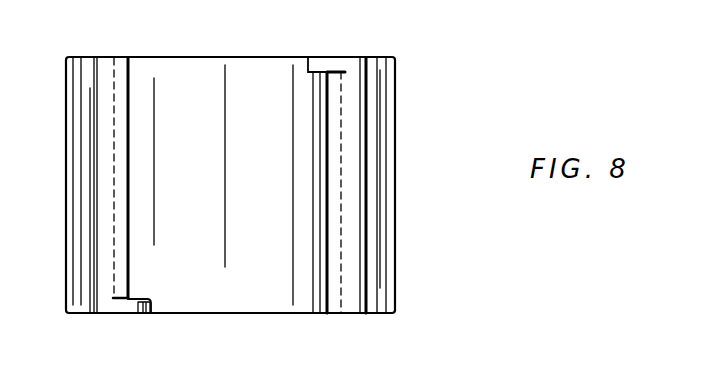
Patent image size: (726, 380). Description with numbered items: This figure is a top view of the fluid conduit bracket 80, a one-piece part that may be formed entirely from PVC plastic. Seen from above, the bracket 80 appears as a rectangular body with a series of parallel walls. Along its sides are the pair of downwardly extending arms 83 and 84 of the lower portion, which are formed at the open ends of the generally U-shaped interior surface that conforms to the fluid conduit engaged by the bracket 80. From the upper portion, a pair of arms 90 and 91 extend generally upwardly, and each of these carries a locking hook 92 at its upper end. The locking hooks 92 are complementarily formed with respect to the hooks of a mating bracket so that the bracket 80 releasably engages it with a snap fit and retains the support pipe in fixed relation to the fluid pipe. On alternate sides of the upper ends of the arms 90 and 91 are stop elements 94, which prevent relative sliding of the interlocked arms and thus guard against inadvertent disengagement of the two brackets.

The fluid conduit bracket 80 is at (422, 142).
The downwardly extending arm 83 is at (386, 258).
The downwardly extending arm 84 is at (68, 183).
The arm 90 is at (358, 188).
The arm 91 is at (100, 232).
The locking hook 92 is at (128, 215).
The stop element 94 is at (318, 62).